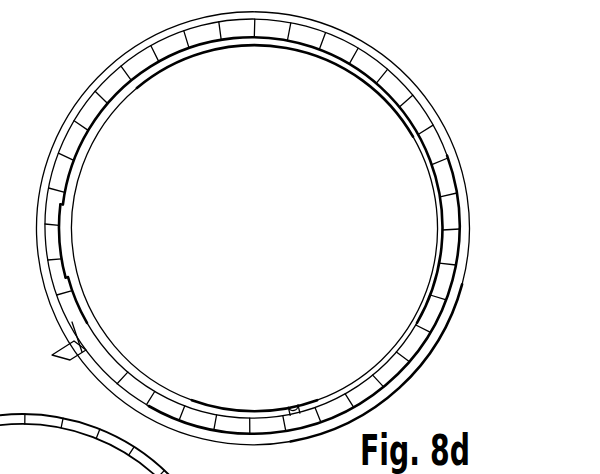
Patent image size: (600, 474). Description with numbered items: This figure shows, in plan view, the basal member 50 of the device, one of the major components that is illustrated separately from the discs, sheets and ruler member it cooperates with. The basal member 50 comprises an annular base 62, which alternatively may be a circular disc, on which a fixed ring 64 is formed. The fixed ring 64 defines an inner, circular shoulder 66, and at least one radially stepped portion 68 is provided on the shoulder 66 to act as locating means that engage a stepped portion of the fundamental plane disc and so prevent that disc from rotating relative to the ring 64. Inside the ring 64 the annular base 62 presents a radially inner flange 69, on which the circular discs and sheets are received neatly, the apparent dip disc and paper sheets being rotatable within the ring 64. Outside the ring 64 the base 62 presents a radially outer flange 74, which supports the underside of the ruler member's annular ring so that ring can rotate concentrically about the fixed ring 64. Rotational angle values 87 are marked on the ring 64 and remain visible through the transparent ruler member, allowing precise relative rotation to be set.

The basal member 50 is at (403, 64).
The annular base 62 is at (431, 172).
The fixed ring 64 is at (140, 61).
The inner circular shoulder 66 is at (302, 418).
The radially stepped portion 68 is at (384, 96).
The radially inner flange 69 is at (118, 361).
The radially outer flange 74 is at (418, 352).
The rotational angle values 87 is at (53, 355).